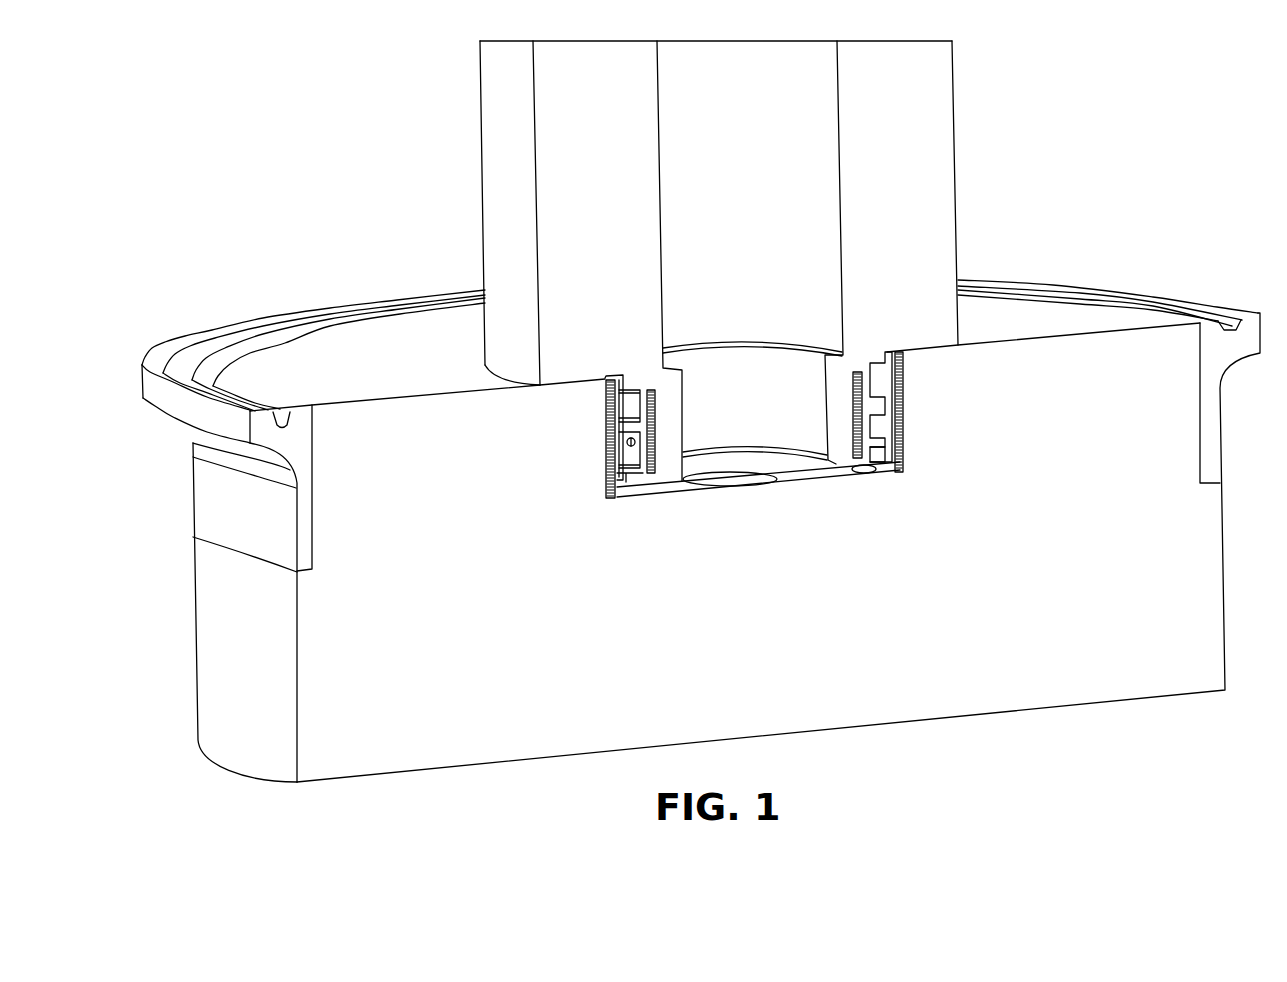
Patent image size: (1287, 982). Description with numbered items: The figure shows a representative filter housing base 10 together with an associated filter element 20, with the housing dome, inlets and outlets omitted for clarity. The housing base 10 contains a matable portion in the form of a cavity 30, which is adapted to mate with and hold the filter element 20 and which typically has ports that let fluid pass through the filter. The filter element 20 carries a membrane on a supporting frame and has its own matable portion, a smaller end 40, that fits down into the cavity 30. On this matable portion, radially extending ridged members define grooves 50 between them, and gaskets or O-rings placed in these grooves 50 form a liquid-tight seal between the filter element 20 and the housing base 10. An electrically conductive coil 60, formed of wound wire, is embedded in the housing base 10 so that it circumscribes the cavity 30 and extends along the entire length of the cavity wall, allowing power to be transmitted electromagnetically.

The filter housing base 10 is at (937, 718).
The filter element 20 is at (955, 210).
The cavity 30 is at (785, 484).
The smaller end 40 is at (878, 452).
The grooves 50 is at (877, 425).
The electrically conductive coil 60 is at (608, 473).